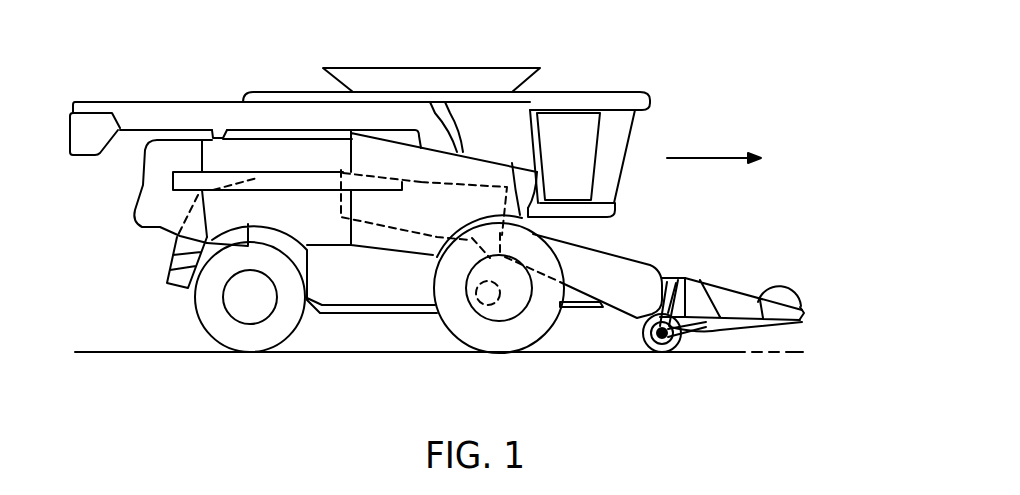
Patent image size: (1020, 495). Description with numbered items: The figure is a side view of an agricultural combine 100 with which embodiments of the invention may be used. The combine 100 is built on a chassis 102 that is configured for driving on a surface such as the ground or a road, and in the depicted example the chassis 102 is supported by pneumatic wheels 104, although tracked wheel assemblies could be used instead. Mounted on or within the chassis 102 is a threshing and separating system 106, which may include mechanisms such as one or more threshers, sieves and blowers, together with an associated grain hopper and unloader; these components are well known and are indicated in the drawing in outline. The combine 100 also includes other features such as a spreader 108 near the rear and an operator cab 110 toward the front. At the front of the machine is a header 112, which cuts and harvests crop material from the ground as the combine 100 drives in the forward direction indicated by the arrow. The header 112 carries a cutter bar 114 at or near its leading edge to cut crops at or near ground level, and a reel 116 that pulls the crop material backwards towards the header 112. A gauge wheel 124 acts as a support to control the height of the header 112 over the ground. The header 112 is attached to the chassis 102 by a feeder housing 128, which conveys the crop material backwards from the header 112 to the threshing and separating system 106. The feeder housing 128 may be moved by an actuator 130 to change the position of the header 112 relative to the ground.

The agricultural combine 100 is at (734, 81).
The chassis 102 is at (327, 333).
The pneumatic wheels 104 is at (240, 340).
The threshing and separating system 106 is at (421, 182).
The spreader 108 is at (175, 267).
The operator cab 110 is at (570, 128).
The header 112 is at (720, 300).
The cutter bar 114 is at (800, 308).
The reel 116 is at (778, 287).
The gauge wheel 124 is at (656, 345).
The feeder housing 128 is at (620, 275).
The actuator 130 is at (577, 308).